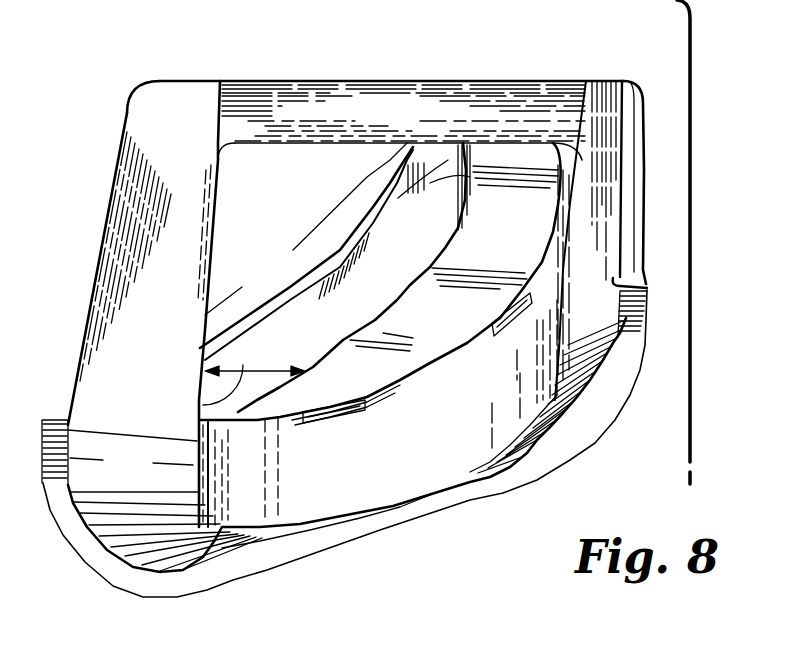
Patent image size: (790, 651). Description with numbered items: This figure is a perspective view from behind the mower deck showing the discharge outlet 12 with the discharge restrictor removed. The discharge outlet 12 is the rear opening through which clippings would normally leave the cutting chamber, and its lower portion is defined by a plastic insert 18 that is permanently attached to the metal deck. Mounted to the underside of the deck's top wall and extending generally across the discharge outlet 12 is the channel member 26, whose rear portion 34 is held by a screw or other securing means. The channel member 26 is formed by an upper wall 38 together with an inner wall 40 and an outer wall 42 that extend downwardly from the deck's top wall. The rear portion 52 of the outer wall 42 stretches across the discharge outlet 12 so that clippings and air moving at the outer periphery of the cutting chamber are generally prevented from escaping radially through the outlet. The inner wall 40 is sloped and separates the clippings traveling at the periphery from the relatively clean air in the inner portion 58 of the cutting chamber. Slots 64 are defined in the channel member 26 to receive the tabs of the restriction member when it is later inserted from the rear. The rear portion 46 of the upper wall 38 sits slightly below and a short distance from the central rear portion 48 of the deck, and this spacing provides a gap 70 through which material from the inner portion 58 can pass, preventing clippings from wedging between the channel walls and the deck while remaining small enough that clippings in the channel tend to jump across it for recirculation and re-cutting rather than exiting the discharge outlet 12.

The discharge outlet 12 is at (309, 148).
The plastic insert 18 is at (188, 540).
The channel member 26 is at (492, 226).
The rear portion of the channel member 34 is at (290, 507).
The upper wall 38 is at (430, 337).
The inner wall 40 is at (447, 160).
The outer wall 42 is at (420, 473).
The rear portion of the upper wall 46 is at (340, 380).
The central rear portion of the deck 48 is at (256, 323).
The rear portion of the outer wall 52 is at (220, 477).
The inner portion of the cutting chamber 58 is at (353, 303).
The slots 64 is at (348, 421).
The gap 70 is at (203, 403).